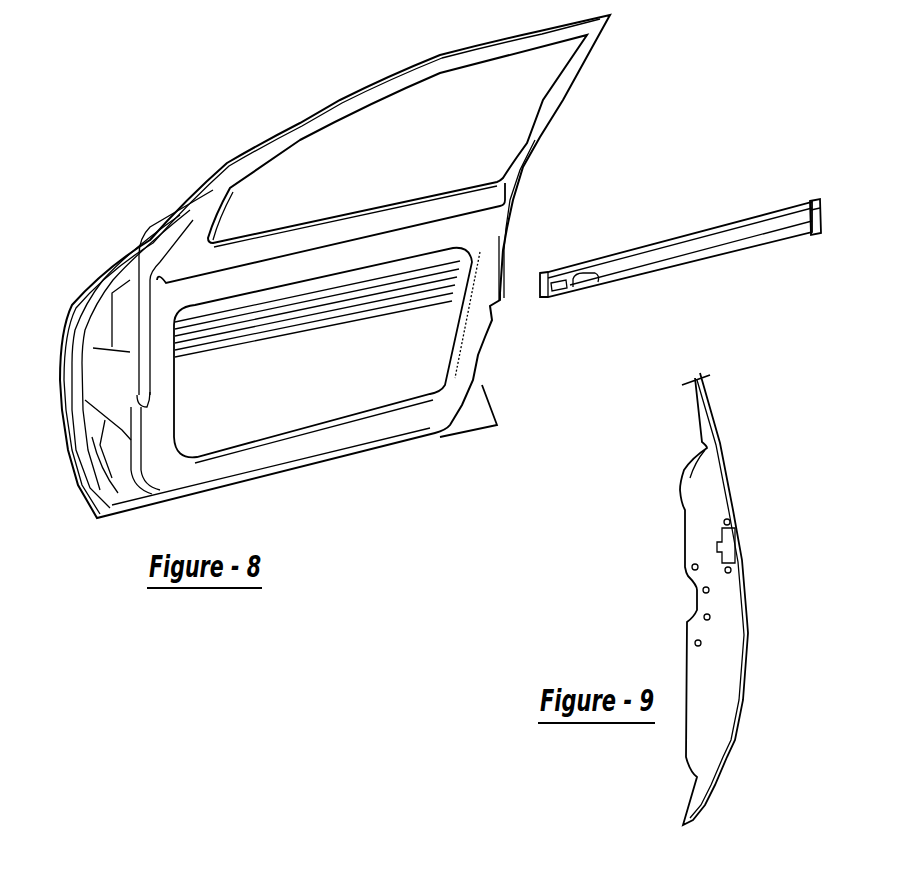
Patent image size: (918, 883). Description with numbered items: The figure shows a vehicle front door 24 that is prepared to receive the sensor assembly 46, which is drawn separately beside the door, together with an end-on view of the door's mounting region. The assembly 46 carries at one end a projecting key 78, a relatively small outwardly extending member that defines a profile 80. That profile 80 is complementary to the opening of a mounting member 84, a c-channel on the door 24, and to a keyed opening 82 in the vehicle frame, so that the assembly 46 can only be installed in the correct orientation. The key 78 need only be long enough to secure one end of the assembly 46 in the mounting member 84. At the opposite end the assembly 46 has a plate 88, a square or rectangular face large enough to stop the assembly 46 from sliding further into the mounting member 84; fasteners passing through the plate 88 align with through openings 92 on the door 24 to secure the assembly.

In FIG. 8, the front door 24 is at (335, 266).
In FIG. 9, the front door 24 is at (736, 599).
In FIG. 8, the assembly 46 is at (684, 249).
In FIG. 8, the projecting key 78 is at (592, 276).
In FIG. 8, the profile 80 is at (557, 292).
In FIG. 8, the mounting member 84 is at (298, 333).
In FIG. 8, the plate 88 is at (822, 203).
In FIG. 9, the keyed opening 82 is at (726, 545).
In FIG. 9, the through opening 92 is at (730, 521).